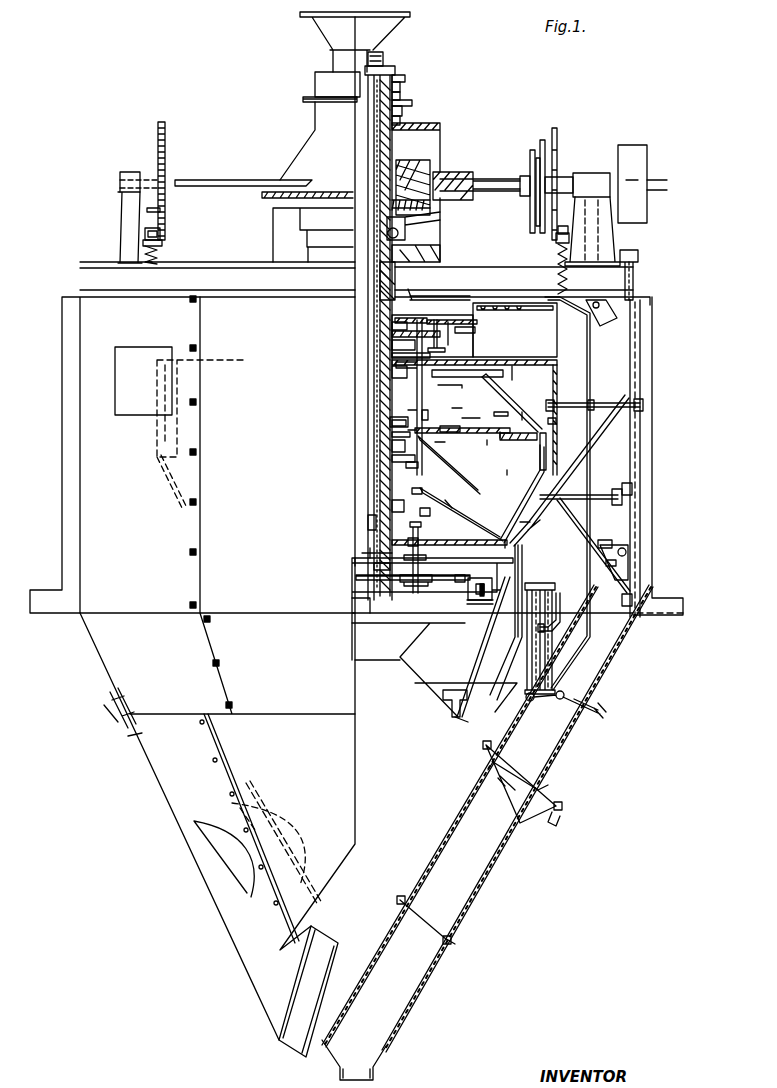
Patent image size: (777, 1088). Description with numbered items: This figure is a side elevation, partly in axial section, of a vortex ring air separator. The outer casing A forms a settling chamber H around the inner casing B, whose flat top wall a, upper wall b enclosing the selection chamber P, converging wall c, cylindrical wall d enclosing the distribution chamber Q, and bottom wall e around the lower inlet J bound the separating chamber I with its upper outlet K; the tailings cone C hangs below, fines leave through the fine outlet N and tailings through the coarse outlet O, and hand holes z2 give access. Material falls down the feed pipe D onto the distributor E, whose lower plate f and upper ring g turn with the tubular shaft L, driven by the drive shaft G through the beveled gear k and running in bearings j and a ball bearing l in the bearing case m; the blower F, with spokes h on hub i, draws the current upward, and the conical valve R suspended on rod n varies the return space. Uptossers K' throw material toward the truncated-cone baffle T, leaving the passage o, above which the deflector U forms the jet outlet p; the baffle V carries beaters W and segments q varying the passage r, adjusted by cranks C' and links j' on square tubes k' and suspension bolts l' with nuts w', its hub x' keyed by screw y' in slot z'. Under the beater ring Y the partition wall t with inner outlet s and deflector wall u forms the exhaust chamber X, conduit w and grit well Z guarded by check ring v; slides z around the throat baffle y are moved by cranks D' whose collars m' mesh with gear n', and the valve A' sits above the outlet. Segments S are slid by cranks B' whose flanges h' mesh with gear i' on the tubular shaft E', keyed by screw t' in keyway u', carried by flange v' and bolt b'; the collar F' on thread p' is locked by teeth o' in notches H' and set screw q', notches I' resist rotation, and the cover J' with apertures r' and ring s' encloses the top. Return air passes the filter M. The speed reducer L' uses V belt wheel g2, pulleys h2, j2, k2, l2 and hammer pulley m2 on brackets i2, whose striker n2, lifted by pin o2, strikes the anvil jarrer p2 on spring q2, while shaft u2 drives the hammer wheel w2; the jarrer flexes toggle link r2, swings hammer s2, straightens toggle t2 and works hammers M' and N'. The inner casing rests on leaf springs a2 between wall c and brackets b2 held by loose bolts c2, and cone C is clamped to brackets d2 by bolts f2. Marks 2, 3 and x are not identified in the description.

The outer casing A is at (192, 528).
The hand holes z2 is at (138, 416).
The coarse outlet O is at (268, 1020).
The fine outlet N is at (358, 1061).
The tailings cone C is at (487, 818).
The loose bolts c2 is at (570, 518).
The bolts f2 is at (522, 763).
The brackets d2 is at (529, 801).
The notches I' is at (355, 42).
The cover J' is at (322, 84).
The notches H' is at (331, 107).
The supply conduit D is at (315, 182).
The shaft u2 is at (290, 182).
The gear hammer wheel w2 is at (166, 132).
The stop 2 is at (158, 176).
The gear i' is at (241, 362).
The pin o2 is at (147, 210).
The gravity striker n2 is at (145, 232).
The anvil jarrer p2 is at (143, 242).
The spring q2 is at (146, 256).
The hub i is at (360, 333).
The screw thread p' is at (389, 48).
The apertures r' is at (406, 64).
The removable ring s' is at (414, 70).
The collar or wheel F' is at (411, 81).
The set screw q' is at (425, 84).
The teeth o' is at (425, 98).
The bearings j is at (416, 179).
The bearing case m is at (429, 183).
The tubular shaft L is at (413, 176).
The beveled gear k is at (422, 191).
The ball bearing l is at (419, 226).
The speed reducer L' is at (601, 134).
The small pulley j2 is at (524, 196).
The V belt wheel g2 is at (530, 166).
The large pulley h2 is at (534, 157).
The large pulley k2 is at (543, 140).
The hammer pulley m2 is at (557, 140).
The small pulley l2 is at (560, 176).
The bearing bracket i2 is at (592, 173).
The drive shaft G is at (657, 180).
The adjustable rod n is at (529, 277).
The outer settling chamber H is at (614, 493).
The swinging hammer M' is at (629, 316).
The contracting toggle link r2 is at (601, 409).
The leaf springs a2 is at (556, 480).
The brackets b2 is at (604, 516).
The swinging hammer N' is at (634, 560).
The small diameter cylindrical wall d is at (517, 622).
The gravity impact hammer s2 is at (556, 595).
The converging middle wall c is at (540, 547).
The blower F is at (515, 330).
The upper outlet K is at (445, 337).
The valve a' is at (452, 301).
The spokes h is at (439, 300).
The adjusting nut w' is at (365, 317).
The toothed ring n' is at (384, 329).
The crank D' is at (366, 345).
The radially adjustable segments z is at (376, 362).
The throat baffle y is at (366, 379).
The toothed collar m' is at (445, 339).
The pin 3 is at (478, 368).
The valve A' is at (480, 329).
The flat top wall a is at (484, 372).
The inner casing B is at (564, 420).
The large diameter upper wall b is at (560, 419).
The beater means Y is at (482, 384).
The check ring v is at (525, 376).
The grit well Z is at (515, 403).
The exhaust chamber X is at (481, 413).
The deflector wall u is at (455, 395).
The inner outlet s is at (456, 398).
The annular partition wall t is at (522, 409).
The square tube k' is at (406, 397).
The link j' is at (430, 407).
The radially adjustable segments q is at (451, 424).
The upward current passage r is at (465, 423).
The beaters W is at (518, 450).
The downward conduit w is at (558, 450).
The crank C' is at (399, 494).
The hub x' is at (369, 427).
The key screw y' is at (367, 443).
The key slot z' is at (374, 458).
The current deflector U is at (449, 465).
The baffle V is at (449, 448).
The selection chamber P is at (480, 452).
The suspension bolt l' is at (412, 463).
The inward upward current passage o is at (409, 482).
The separating chamber I is at (513, 483).
The keyway u' is at (381, 499).
The key screw t' is at (419, 502).
The rotary deflector baffle T is at (461, 514).
The jet outlet p is at (459, 511).
The pin x is at (509, 532).
The tubular shaft E' is at (352, 523).
The upper ring g is at (412, 539).
The bolt b' is at (424, 556).
The overlapped segments S is at (452, 610).
The lip or flange v' is at (361, 560).
The toothed collar h' is at (424, 558).
The crank B' is at (422, 576).
The distribution chamber Q is at (462, 570).
The distributor E is at (492, 609).
The lower plate f is at (370, 597).
The uptosser means K' is at (479, 616).
The filter M is at (547, 638).
The lower peripheral inlet J is at (434, 670).
The converging bottom wall e is at (482, 649).
The conical valve R is at (442, 698).
The expansion toggle t2 is at (556, 694).